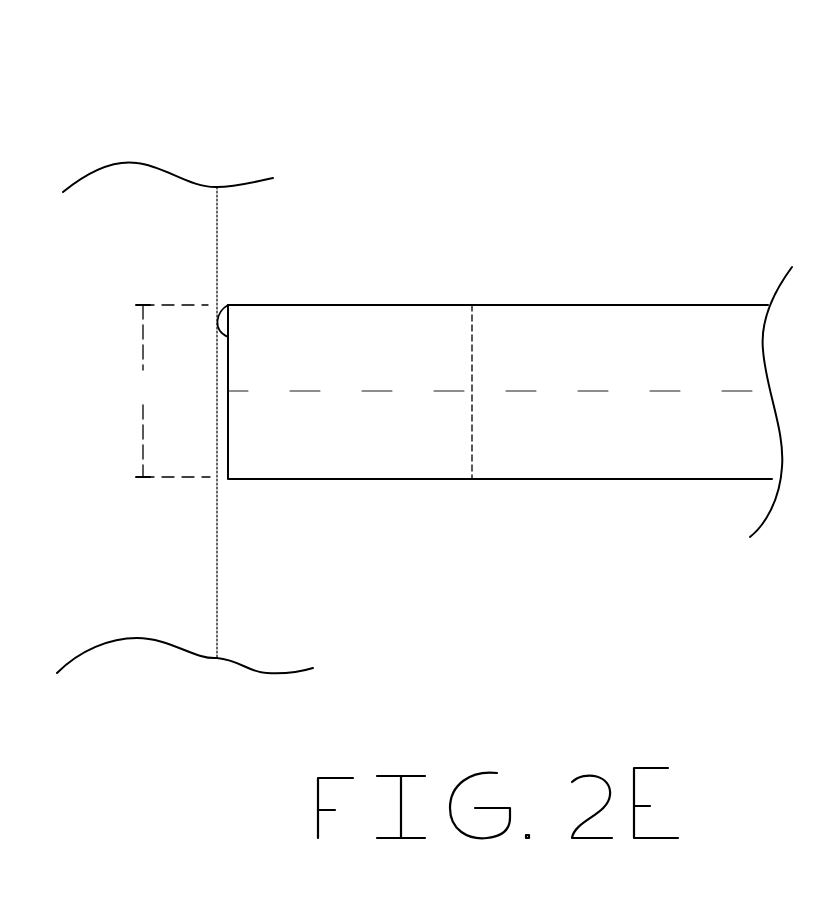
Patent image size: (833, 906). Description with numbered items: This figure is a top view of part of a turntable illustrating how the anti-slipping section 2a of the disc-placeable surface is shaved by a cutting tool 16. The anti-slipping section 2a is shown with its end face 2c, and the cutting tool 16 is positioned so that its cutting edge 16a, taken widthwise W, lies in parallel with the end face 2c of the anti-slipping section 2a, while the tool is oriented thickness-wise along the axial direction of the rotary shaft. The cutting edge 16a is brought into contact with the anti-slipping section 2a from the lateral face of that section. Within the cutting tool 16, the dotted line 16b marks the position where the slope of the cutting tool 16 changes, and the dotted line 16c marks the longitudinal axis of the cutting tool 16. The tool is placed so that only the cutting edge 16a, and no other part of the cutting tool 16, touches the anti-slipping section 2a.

The anti-slipping section 2a is at (95, 220).
The end face of anti-slipping section 2c is at (220, 263).
The cutting tool 16 is at (523, 322).
The cutting edge 16a is at (228, 300).
The dotted line 16b is at (472, 367).
The dotted line 16c is at (368, 393).
The width W is at (168, 391).